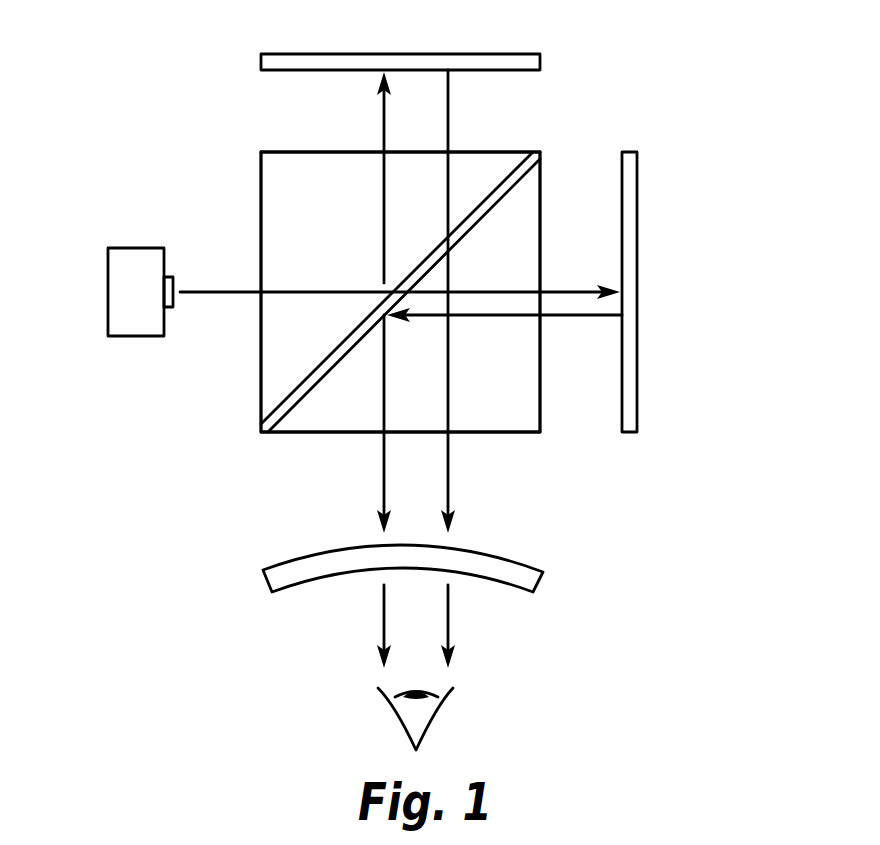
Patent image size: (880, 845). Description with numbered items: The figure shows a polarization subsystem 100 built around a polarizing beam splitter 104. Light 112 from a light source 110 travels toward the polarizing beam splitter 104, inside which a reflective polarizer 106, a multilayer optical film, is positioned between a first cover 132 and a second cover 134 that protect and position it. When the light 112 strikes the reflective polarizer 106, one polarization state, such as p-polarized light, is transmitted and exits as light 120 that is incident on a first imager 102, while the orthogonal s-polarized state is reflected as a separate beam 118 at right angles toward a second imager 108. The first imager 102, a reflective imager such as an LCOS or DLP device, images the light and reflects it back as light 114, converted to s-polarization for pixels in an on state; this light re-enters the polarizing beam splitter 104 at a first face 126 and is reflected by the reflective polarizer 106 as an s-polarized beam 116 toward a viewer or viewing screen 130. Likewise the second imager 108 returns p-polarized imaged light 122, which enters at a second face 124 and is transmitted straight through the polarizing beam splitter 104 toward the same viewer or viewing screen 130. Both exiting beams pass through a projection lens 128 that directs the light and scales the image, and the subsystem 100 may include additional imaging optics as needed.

The polarization subsystem 100 is at (645, 55).
The first imager 102 is at (630, 183).
The polarizing beam splitter 104 is at (273, 180).
The reflective polarizer 106 is at (537, 160).
The second imager 108 is at (470, 58).
The light source 110 is at (117, 290).
The light 112 is at (217, 293).
The light 114 is at (488, 317).
The s-polarized beam 116 is at (383, 495).
The beam 118 is at (383, 127).
The light 120 is at (487, 290).
The imaged light 122 is at (449, 487).
The second face 124 is at (273, 148).
The first face 126 is at (540, 403).
The projection lens 128 is at (533, 575).
The viewer or viewing screen 130 is at (427, 723).
The first cover 132 is at (273, 230).
The second cover 134 is at (302, 417).